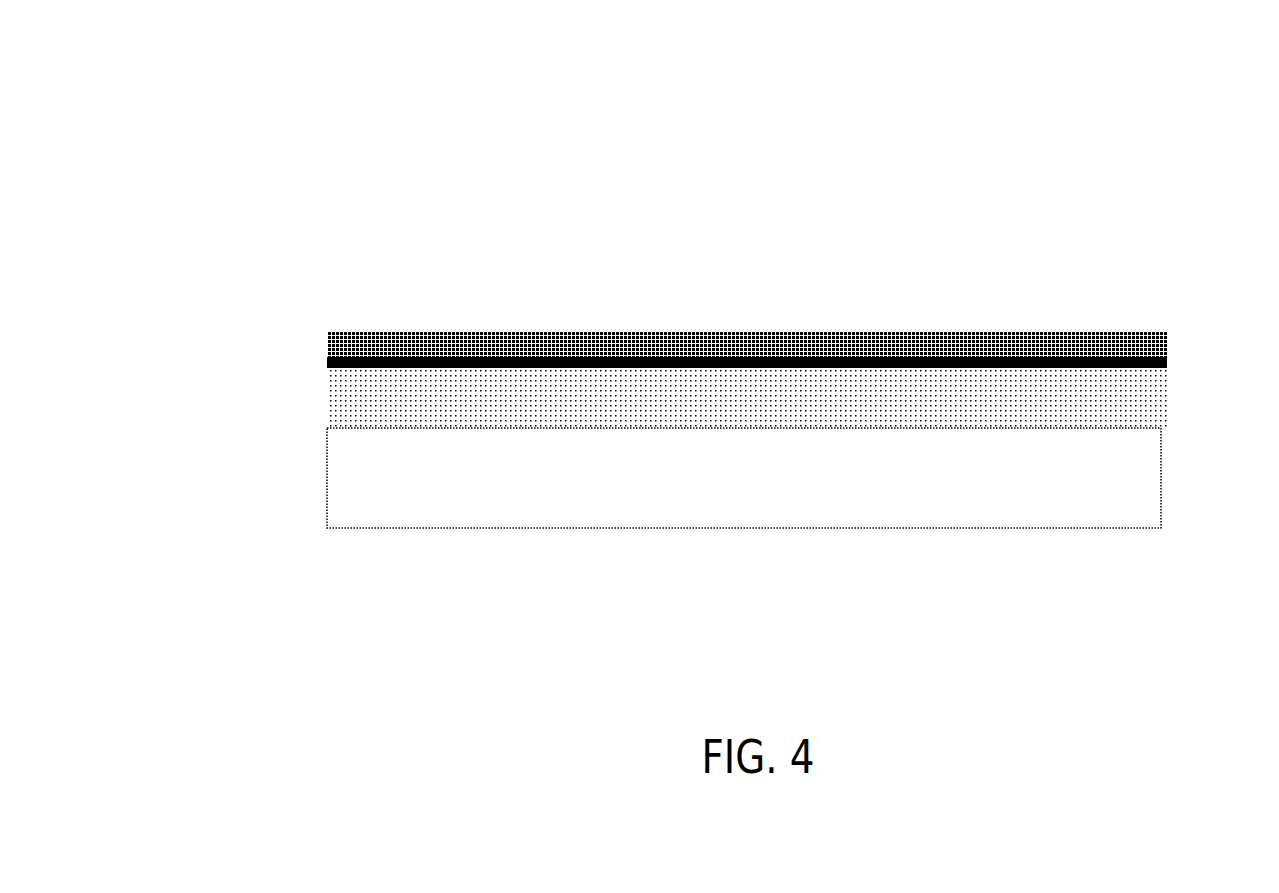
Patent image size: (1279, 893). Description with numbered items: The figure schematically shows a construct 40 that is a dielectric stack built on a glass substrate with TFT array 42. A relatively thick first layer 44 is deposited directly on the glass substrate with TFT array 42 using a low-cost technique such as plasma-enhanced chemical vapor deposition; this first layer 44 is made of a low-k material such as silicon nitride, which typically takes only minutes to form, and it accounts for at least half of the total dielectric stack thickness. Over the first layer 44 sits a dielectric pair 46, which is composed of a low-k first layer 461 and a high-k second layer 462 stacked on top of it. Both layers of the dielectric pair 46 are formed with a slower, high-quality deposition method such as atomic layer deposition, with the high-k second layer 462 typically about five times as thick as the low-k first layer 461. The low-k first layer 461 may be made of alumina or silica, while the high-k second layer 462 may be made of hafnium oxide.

The construct 40 is at (609, 211).
The glass substrate with TFT array 42 is at (327, 520).
The first layer 44 is at (328, 413).
The dielectric pair 46 is at (1168, 332).
The low-k first layer 461 is at (327, 360).
The high-k second layer 462 is at (326, 343).